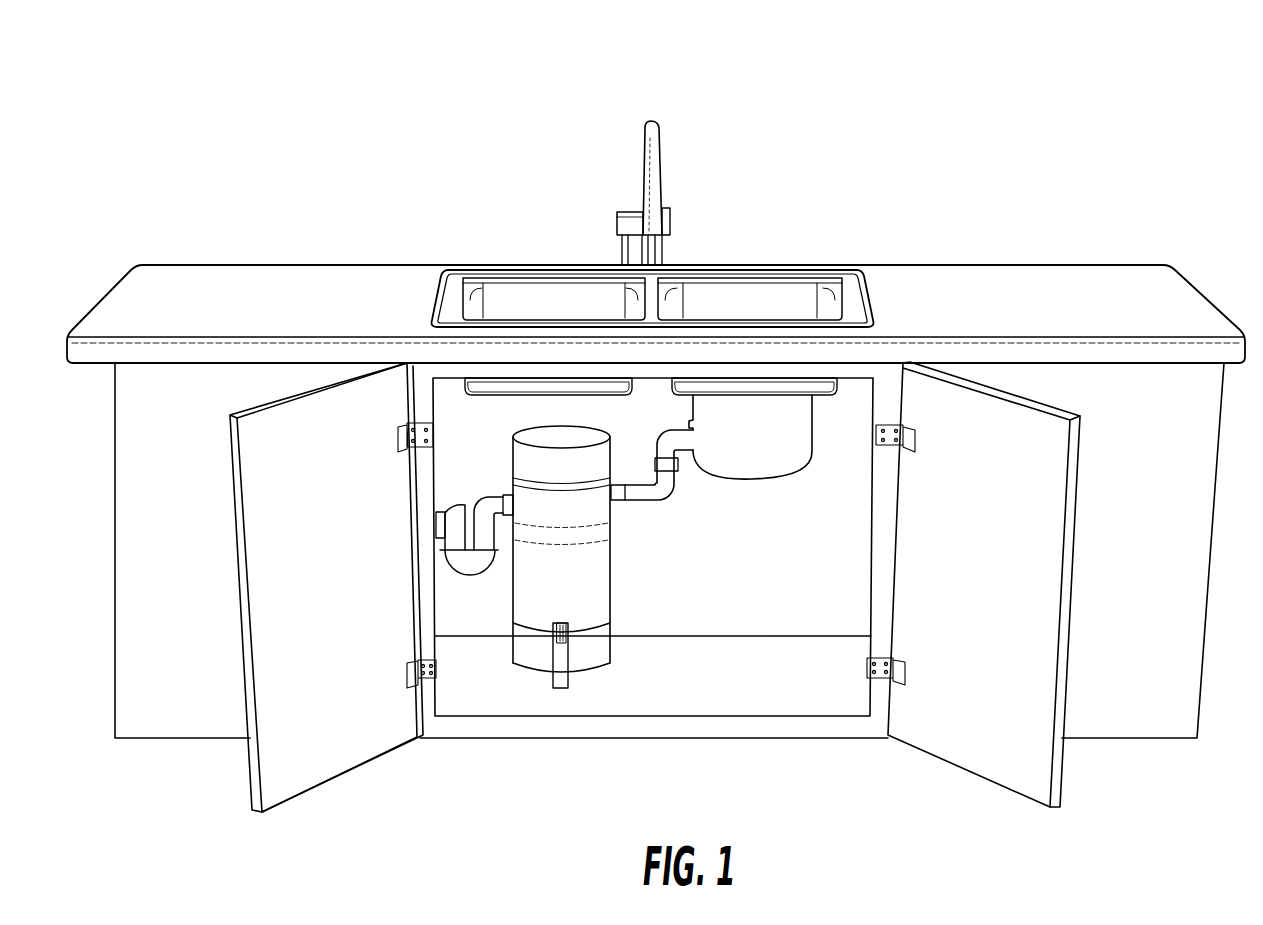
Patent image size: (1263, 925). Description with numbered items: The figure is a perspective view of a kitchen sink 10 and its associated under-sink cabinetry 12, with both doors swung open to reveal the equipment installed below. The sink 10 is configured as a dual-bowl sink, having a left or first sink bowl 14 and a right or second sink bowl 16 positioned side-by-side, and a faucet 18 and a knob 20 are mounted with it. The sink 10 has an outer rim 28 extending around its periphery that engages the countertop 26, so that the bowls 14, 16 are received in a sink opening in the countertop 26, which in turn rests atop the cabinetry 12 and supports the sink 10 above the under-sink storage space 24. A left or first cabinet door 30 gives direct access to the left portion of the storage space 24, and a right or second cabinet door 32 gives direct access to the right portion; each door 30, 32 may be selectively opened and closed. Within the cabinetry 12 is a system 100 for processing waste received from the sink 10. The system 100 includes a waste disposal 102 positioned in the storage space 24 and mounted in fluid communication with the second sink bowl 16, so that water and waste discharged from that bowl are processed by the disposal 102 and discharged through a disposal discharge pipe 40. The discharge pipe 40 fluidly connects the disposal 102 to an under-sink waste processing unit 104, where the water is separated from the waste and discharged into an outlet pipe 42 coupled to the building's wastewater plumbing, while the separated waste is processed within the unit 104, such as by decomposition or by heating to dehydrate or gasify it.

The kitchen sink 10 is at (478, 262).
The under-sink cabinetry 12 is at (262, 386).
The first sink bowl 14 is at (562, 300).
The second sink bowl 16 is at (750, 303).
The faucet 18 is at (658, 132).
The knob 20 is at (627, 218).
The under-sink storage space 24 is at (779, 663).
The countertop 26 is at (1047, 287).
The outer rim 28 is at (842, 282).
The first cabinet door 30 is at (272, 620).
The second cabinet door 32 is at (1040, 597).
The disposal discharge pipe 40 is at (653, 493).
The outlet pipe 42 is at (455, 540).
The system for processing waste 100 is at (701, 507).
The waste disposal 102 is at (758, 479).
The under-sink waste processing unit 104 is at (585, 610).